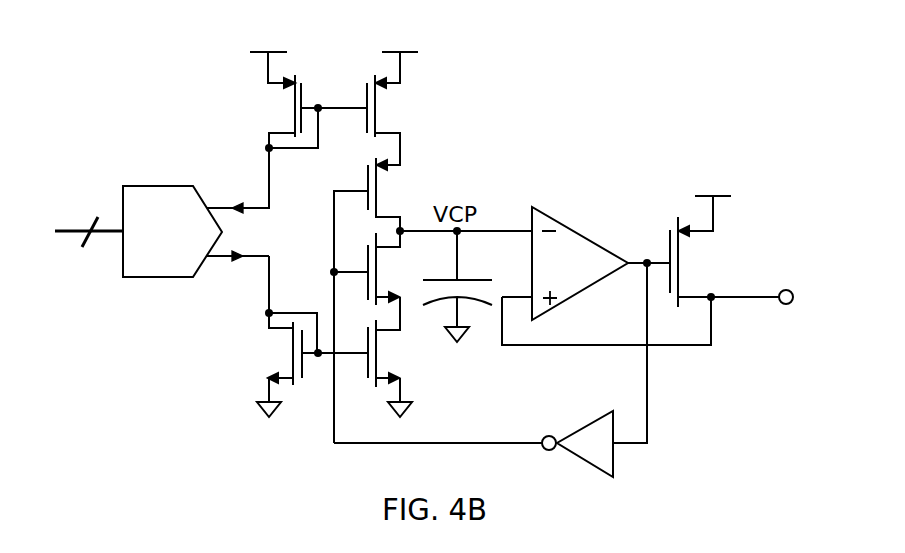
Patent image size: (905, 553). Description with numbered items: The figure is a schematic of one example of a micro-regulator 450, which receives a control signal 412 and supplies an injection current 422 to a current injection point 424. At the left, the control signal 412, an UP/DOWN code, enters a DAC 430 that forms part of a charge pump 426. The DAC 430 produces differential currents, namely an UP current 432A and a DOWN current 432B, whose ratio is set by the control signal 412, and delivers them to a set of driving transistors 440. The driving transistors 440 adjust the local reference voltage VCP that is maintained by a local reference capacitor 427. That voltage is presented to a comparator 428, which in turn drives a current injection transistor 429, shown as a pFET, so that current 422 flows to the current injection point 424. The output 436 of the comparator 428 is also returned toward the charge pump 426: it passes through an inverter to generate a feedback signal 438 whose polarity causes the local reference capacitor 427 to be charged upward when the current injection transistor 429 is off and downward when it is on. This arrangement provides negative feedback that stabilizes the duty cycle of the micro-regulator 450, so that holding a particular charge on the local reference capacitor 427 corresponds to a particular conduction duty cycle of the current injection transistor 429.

The control signal 412 is at (72, 235).
The charge pump 426 is at (167, 93).
The DAC 430 is at (178, 256).
The UP current 432A is at (222, 203).
The DOWN current 432B is at (217, 260).
The driving transistors 440 is at (449, 99).
The local reference capacitor 427 is at (481, 280).
The comparator 428 is at (582, 242).
The current injection transistor 429 is at (668, 233).
The micro-regulator 450 is at (668, 205).
The injection current 422 is at (732, 290).
The current injection point 424 is at (781, 290).
The output of the comparator 436 is at (647, 373).
The feedback signal 438 is at (517, 440).